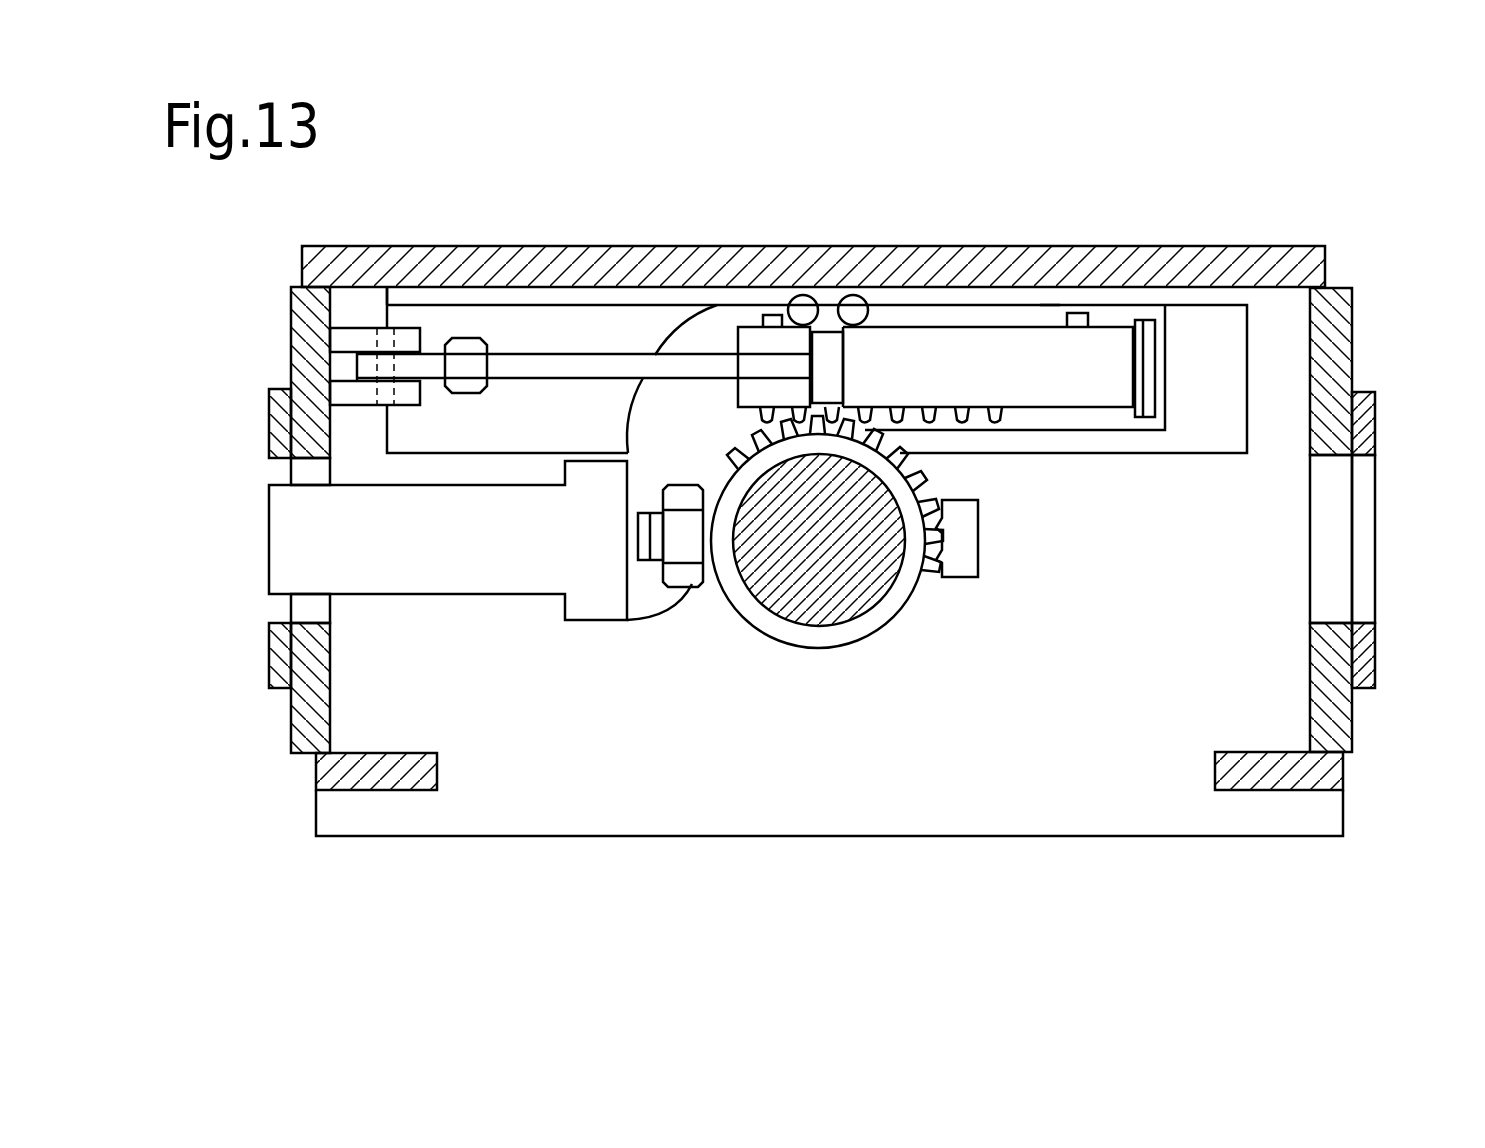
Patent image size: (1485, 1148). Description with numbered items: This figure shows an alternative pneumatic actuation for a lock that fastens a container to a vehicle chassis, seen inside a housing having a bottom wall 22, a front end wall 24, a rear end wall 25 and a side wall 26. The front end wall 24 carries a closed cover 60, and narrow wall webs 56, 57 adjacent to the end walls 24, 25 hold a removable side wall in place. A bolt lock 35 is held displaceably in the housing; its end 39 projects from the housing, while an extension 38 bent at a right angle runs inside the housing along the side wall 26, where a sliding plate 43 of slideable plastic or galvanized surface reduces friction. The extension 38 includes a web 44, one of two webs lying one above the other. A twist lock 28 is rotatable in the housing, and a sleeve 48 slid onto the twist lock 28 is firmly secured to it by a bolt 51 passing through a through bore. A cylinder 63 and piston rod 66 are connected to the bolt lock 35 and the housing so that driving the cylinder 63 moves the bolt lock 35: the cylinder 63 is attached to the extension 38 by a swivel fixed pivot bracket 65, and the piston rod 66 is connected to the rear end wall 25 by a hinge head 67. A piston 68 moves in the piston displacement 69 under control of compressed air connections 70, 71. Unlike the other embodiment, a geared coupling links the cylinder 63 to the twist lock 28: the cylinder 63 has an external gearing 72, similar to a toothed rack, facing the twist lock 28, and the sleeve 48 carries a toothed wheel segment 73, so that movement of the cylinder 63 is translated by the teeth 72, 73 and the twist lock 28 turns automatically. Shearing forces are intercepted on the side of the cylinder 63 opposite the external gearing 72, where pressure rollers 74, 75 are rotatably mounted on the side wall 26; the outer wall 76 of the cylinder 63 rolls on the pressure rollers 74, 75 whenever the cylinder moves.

The bottom wall 22 is at (970, 836).
The front end wall 24 is at (1337, 348).
The rear end wall 25 is at (300, 707).
The side wall 26 is at (500, 257).
The twist lock 28 is at (792, 590).
The bolt lock 35 is at (520, 578).
The extension 38 is at (706, 337).
The end of the bolt lock 39 is at (278, 552).
The sliding plate 43 is at (643, 257).
The web 44 is at (1048, 315).
The sleeve 48 is at (855, 633).
The bolt 51 is at (958, 567).
The wall web 56 is at (388, 787).
The wall web 57 is at (1273, 790).
The closed cover 60 is at (1367, 423).
The cylinder 63 is at (1030, 320).
The pivot bracket 65 is at (1153, 372).
The piston rod 66 is at (573, 360).
The hinge head 67 is at (433, 363).
The piston 68 is at (828, 347).
The piston displacement 69 is at (965, 345).
The compressed air connection 70 is at (764, 315).
The compressed air connection 71 is at (1082, 320).
The external gearing 72 is at (990, 425).
The toothed wheel segment 73 is at (955, 507).
The pressure roller 74 is at (803, 310).
The pressure roller 75 is at (853, 310).
The outer wall 76 is at (897, 327).